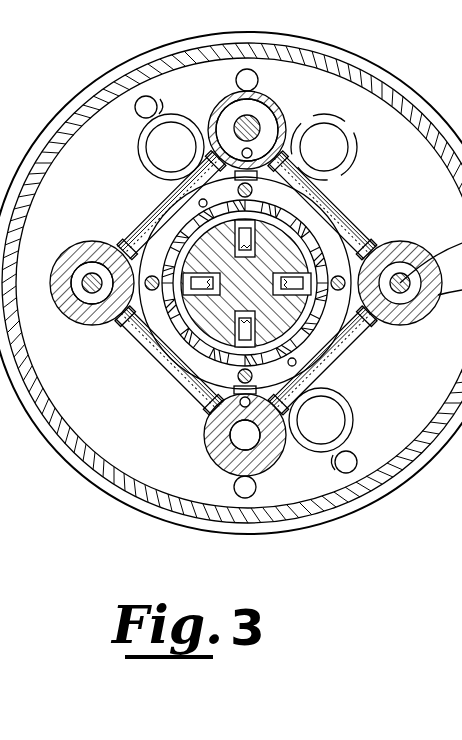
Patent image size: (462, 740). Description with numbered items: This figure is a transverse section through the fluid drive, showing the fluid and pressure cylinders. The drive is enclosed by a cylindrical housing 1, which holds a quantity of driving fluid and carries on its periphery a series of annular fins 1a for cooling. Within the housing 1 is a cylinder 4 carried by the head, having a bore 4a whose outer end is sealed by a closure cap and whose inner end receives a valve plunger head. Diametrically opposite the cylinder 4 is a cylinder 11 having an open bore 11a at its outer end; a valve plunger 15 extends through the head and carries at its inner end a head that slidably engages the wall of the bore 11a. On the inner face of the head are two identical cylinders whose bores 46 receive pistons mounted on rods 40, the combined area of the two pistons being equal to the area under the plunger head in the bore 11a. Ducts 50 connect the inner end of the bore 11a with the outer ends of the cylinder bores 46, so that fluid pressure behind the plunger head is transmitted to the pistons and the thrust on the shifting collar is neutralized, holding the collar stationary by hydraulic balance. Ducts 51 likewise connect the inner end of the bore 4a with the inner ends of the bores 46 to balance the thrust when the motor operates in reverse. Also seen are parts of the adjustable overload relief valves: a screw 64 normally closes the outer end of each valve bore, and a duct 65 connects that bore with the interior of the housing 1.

The cylindrical housing 1 is at (416, 107).
The annular fins 1a is at (394, 70).
The cylinder 4 is at (218, 462).
The bore of cylinder 4a is at (207, 433).
The cylinder 11 is at (291, 110).
The open bore 11a is at (253, 98).
The valve plunger 15 is at (258, 124).
The rods 40 is at (94, 278).
The bores of cylinders 46 is at (78, 246).
The ducts 50 is at (331, 200).
The ducts 51 is at (328, 363).
The screw 64 is at (155, 152).
The duct 65 is at (140, 102).